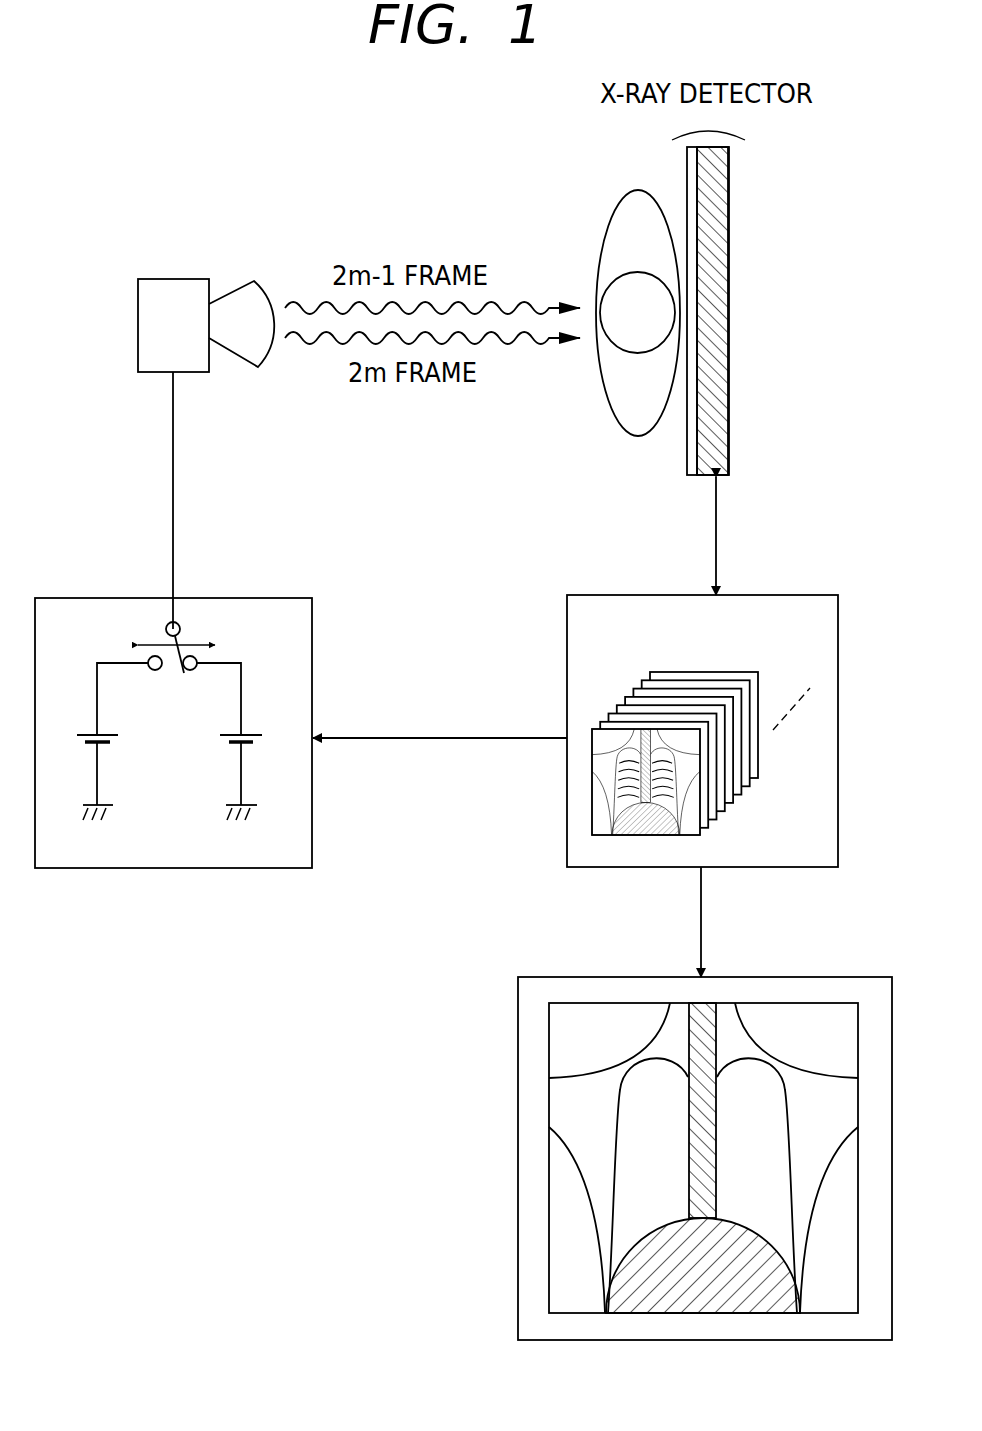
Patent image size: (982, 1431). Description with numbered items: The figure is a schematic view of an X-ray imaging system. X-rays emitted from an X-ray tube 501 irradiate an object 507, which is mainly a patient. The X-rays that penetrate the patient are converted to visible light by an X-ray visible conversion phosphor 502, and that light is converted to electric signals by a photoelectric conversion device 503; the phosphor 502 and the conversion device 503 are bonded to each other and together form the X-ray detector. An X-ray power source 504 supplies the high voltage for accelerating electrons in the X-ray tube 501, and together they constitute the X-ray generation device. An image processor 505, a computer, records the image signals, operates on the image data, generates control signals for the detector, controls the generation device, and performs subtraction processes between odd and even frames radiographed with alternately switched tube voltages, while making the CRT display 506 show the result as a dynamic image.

The X-ray tube 501 is at (172, 293).
The X-ray visible conversion phosphor 502 is at (690, 170).
The photoelectric conversion device 503 is at (720, 347).
The X-ray power source 504 is at (197, 620).
The image processor 505 is at (567, 657).
The CRT display 506 is at (517, 1043).
The object 507 is at (622, 397).